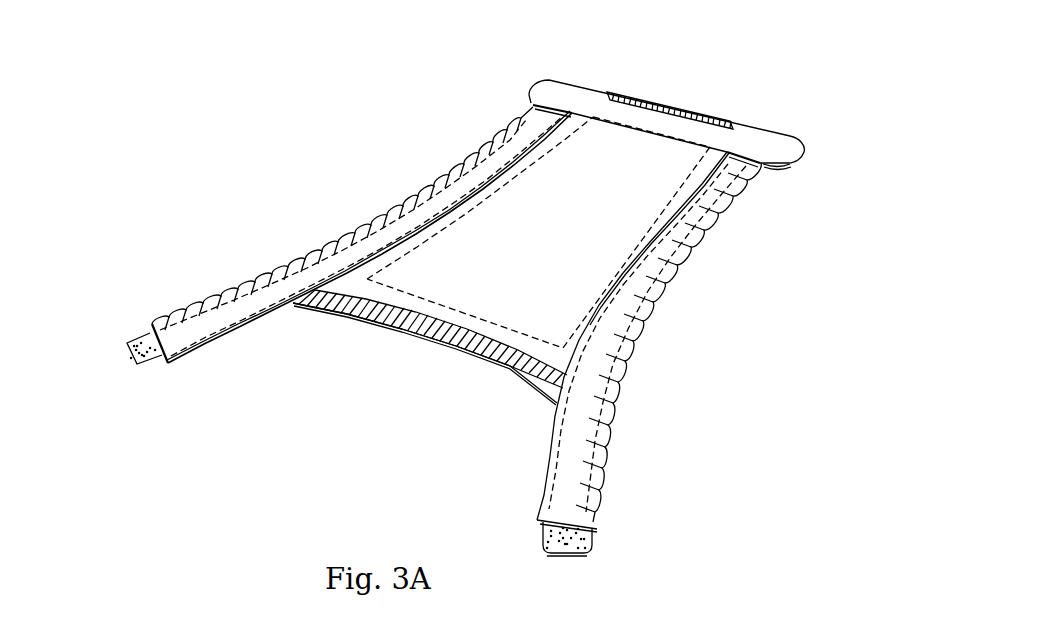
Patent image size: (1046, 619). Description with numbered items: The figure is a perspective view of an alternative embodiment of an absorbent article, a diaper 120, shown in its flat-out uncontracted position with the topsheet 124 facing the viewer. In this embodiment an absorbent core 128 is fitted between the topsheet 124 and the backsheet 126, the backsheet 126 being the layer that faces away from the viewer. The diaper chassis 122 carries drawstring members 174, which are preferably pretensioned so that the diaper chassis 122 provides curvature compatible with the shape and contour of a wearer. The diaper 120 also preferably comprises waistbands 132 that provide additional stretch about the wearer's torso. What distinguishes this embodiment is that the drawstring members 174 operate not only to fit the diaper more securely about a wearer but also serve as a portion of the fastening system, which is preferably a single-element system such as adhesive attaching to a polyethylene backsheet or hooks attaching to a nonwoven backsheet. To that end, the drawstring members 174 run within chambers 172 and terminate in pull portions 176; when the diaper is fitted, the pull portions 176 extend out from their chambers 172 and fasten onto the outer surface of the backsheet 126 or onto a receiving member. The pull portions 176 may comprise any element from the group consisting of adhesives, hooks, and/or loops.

The diaper 120 is at (796, 80).
The diaper chassis 122 is at (784, 147).
The topsheet 124 is at (608, 222).
The backsheet 126 is at (786, 163).
The absorbent core 128 is at (592, 117).
The waistbands 132 is at (677, 103).
The chambers 172 is at (228, 298).
The drawstring members 174 is at (305, 262).
The pull portions 176 is at (127, 345).